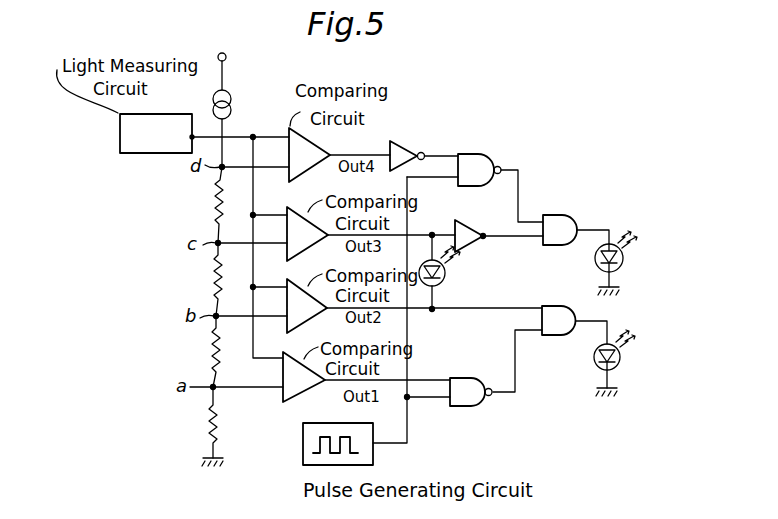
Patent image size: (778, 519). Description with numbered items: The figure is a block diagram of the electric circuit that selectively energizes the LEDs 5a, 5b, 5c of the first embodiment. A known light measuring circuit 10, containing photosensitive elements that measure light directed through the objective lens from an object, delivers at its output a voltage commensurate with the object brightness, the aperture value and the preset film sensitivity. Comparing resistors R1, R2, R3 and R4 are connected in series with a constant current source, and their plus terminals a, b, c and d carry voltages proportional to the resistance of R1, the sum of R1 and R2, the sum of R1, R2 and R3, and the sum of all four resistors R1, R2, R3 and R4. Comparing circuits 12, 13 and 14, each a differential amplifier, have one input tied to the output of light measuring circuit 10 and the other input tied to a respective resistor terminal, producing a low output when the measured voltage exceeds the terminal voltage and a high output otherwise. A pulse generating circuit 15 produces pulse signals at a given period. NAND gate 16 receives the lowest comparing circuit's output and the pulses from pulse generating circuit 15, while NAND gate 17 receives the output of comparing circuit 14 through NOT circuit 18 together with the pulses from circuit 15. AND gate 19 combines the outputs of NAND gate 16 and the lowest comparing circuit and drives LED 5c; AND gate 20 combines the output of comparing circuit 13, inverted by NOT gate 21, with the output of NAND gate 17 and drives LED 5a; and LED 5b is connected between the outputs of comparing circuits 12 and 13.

The light measuring circuit 10 is at (156, 133).
The comparing circuit 12 is at (307, 306).
The comparing circuit 13 is at (307, 234).
The comparing circuit 14 is at (309, 155).
The pulse generating circuit 15 is at (303, 447).
The NAND gate 16 is at (464, 406).
The NAND gate 17 is at (490, 153).
The NOT circuit 18 is at (421, 152).
The AND gate 19 is at (560, 336).
The AND gate 20 is at (572, 215).
The NOT gate 21 is at (470, 232).
The LED 5a is at (622, 266).
The LED 5b is at (446, 278).
The LED 5c is at (624, 365).
The comparing resistor R1 is at (209, 420).
The comparing resistor R2 is at (208, 352).
The comparing resistor R3 is at (210, 279).
The comparing resistor R4 is at (213, 206).